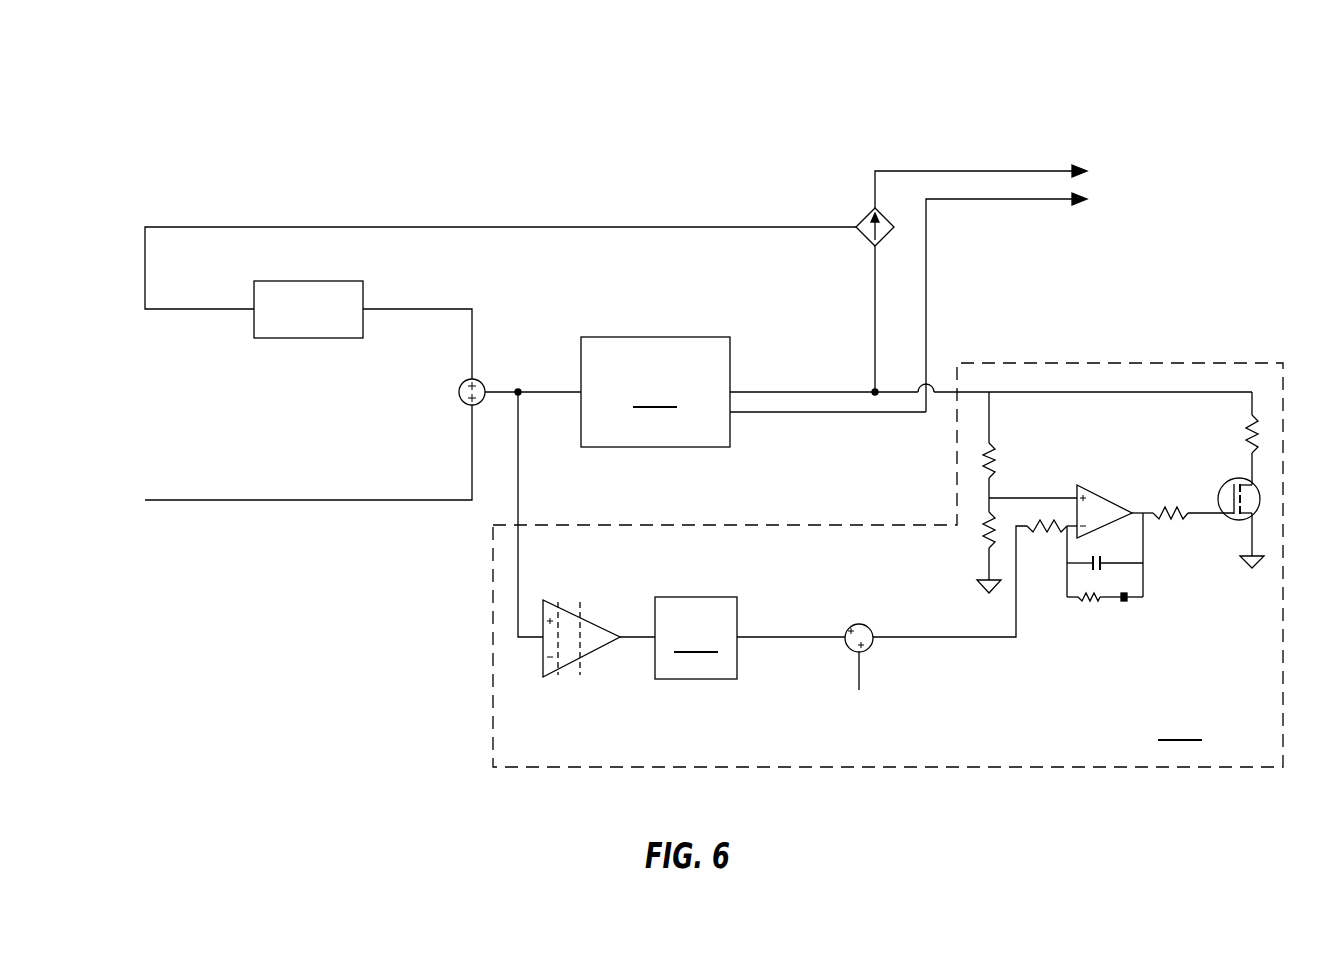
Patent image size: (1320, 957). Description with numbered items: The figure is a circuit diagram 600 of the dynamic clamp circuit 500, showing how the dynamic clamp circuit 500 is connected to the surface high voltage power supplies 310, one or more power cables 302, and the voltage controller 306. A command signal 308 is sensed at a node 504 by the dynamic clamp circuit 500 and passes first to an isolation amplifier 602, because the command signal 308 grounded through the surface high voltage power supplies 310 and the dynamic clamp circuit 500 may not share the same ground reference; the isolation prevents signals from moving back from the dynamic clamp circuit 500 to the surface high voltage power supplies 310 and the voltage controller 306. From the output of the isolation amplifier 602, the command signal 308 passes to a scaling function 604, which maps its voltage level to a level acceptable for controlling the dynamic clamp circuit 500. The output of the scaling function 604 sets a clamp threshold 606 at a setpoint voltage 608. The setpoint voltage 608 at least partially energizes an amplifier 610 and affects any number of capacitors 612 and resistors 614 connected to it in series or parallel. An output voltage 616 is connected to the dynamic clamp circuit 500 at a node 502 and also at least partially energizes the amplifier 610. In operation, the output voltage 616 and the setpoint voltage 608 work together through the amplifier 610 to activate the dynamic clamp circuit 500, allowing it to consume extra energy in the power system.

The circuit diagram 600 is at (147, 93).
The voltage controller 306 is at (478, 380).
The node 504 is at (518, 392).
The command signal 308 is at (538, 392).
The surface high voltage power supplies 310 is at (753, 392).
The power cables 302 is at (875, 303).
The node 502 is at (875, 392).
The output voltage 616 is at (934, 392).
The dynamic clamp circuit 500 is at (888, 565).
The amplifier 610 is at (1105, 497).
The capacitors 612 is at (1100, 565).
The resistors 614 is at (1090, 600).
The setpoint voltage 608 is at (1016, 612).
The clamp threshold 606 is at (862, 624).
The scaling function 604 is at (678, 638).
The isolation amplifier 602 is at (595, 652).